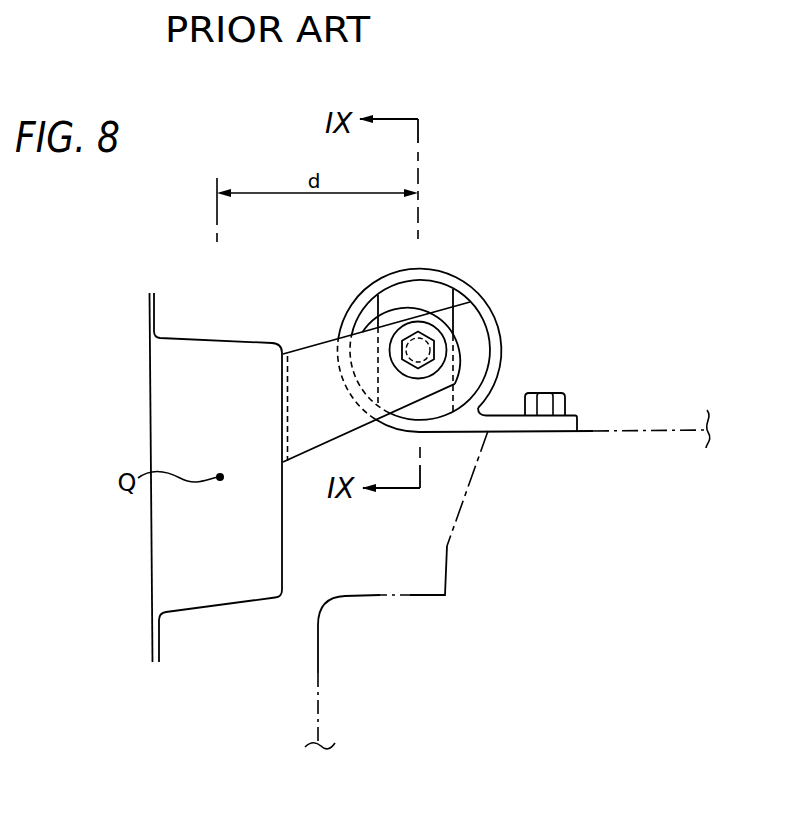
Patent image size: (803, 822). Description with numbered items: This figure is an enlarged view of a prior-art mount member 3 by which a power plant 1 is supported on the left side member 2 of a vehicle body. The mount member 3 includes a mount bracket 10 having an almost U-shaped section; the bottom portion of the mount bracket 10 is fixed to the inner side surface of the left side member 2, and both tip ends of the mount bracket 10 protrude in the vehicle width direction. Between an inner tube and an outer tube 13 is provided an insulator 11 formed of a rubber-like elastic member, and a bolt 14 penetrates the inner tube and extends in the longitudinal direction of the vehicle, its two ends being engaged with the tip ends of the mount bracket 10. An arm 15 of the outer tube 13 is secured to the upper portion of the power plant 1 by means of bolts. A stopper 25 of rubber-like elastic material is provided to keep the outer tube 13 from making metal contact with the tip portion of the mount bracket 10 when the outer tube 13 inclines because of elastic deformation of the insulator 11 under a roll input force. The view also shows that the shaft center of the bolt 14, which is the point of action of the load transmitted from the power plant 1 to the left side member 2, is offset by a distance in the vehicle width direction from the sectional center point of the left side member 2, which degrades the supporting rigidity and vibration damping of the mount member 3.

The power plant 1 is at (660, 428).
The left side member 2 is at (120, 436).
The mount member 3 is at (450, 255).
The mount bracket 10 is at (315, 345).
The insulator 11 is at (474, 320).
The outer tube 13 is at (503, 338).
The bolt 14 is at (428, 338).
The arm 15 is at (576, 414).
The stopper 25 is at (400, 290).